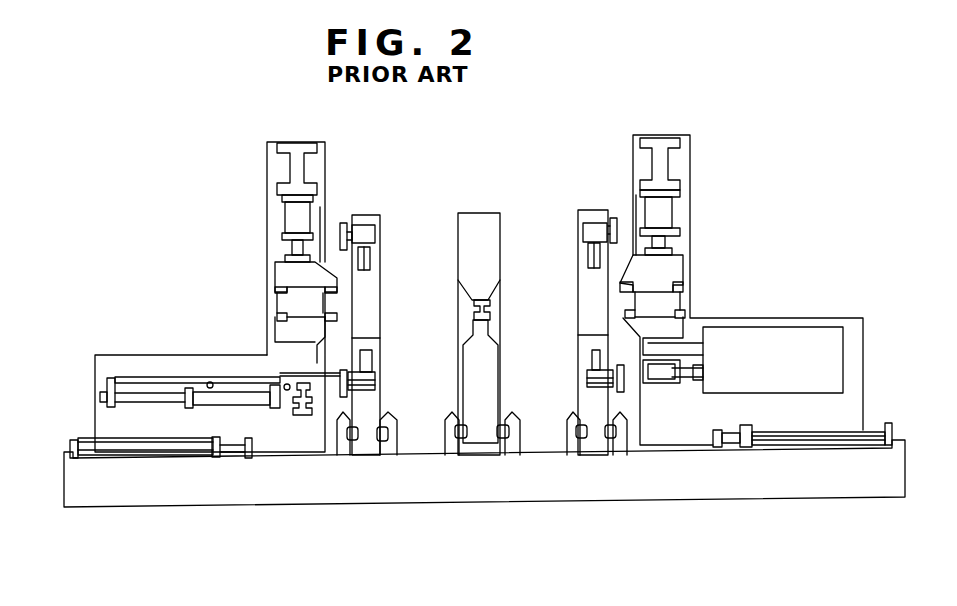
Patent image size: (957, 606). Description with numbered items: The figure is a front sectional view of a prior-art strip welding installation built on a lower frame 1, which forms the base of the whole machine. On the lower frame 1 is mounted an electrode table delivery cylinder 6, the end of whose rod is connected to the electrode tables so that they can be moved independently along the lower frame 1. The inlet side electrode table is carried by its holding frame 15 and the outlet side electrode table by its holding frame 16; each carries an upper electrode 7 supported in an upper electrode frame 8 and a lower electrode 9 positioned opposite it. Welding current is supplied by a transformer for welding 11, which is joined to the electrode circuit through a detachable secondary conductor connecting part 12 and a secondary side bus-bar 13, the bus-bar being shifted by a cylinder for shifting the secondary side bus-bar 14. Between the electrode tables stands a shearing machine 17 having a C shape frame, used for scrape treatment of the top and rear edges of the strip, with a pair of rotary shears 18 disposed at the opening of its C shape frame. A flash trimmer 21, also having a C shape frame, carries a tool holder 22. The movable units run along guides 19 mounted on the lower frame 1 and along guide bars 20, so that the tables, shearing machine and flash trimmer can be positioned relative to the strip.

The lower frame 1 is at (190, 508).
The electrode table delivery cylinder 6 is at (75, 445).
The upper electrode 7 is at (348, 290).
The upper electrode frame 8 is at (325, 205).
The lower electrode 9 is at (353, 317).
The transformer for welding 11 is at (843, 357).
The detachable secondary conductor connecting part 12 is at (672, 387).
The secondary side bus-bar 13 is at (168, 357).
The cylinder for shifting the secondary side bus-bar 14 is at (253, 405).
The holding frame of the inlet side electrode table 15 is at (268, 206).
The holding frame of the outlet side electrode table 16 is at (692, 208).
The shearing machine 17 is at (375, 217).
The pair of rotary shears 18 is at (342, 225).
The guide 19 is at (442, 418).
The guide bar 20 is at (380, 436).
The flash trimmer 21 is at (478, 213).
The tool holder 22 is at (483, 305).